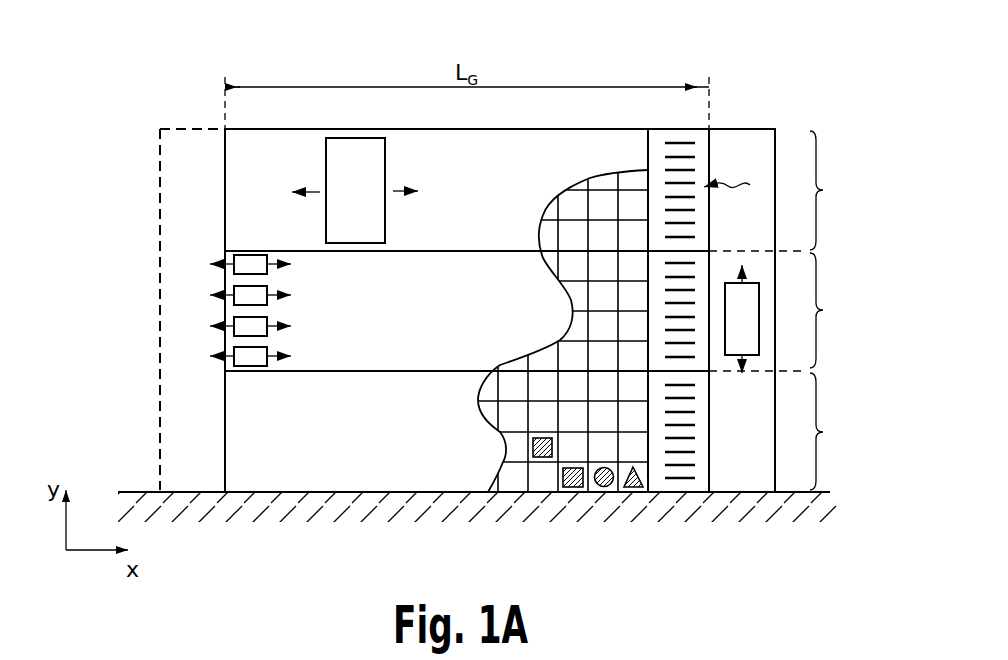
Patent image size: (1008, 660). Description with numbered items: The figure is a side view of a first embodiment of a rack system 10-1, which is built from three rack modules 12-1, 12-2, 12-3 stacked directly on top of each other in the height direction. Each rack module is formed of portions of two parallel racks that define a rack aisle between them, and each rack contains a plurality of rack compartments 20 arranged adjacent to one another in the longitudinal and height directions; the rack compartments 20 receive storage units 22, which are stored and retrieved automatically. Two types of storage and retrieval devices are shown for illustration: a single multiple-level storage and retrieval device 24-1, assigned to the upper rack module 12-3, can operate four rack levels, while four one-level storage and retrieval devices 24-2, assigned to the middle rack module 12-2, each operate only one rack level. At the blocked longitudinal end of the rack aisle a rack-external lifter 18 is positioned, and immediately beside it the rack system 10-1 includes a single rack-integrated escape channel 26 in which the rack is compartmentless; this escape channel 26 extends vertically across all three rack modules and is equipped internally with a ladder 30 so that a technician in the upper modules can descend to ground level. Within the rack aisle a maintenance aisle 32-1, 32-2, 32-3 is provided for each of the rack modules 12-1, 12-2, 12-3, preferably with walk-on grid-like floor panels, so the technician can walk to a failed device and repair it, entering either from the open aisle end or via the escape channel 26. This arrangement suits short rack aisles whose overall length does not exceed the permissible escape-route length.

The rack system 10-1 is at (136, 108).
The rack module 12-1 is at (843, 431).
The rack module 12-2 is at (792, 313).
The rack module 12-3 is at (792, 191).
The lifter 18 is at (738, 128).
The rack compartments 20 is at (598, 237).
The storage units 22 is at (543, 458).
The multiple-level storage and retrieval device 24-1 is at (380, 204).
The one-level storage and retrieval devices 24-2 is at (268, 273).
The escape channel 26 is at (658, 124).
The ladder 30 is at (739, 187).
The maintenance aisle 32-1 is at (467, 482).
The maintenance aisle 32-2 is at (467, 362).
The maintenance aisle 32-3 is at (512, 241).